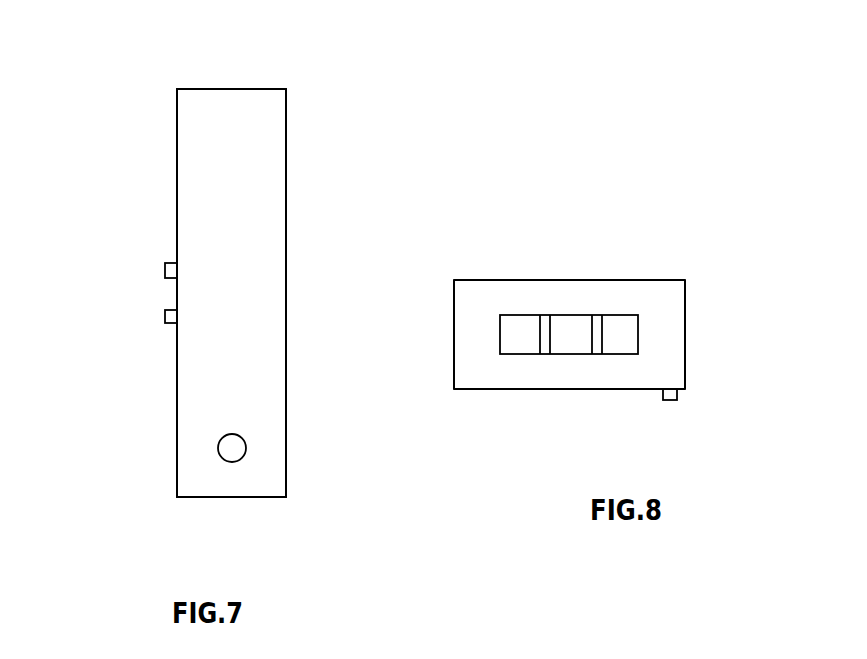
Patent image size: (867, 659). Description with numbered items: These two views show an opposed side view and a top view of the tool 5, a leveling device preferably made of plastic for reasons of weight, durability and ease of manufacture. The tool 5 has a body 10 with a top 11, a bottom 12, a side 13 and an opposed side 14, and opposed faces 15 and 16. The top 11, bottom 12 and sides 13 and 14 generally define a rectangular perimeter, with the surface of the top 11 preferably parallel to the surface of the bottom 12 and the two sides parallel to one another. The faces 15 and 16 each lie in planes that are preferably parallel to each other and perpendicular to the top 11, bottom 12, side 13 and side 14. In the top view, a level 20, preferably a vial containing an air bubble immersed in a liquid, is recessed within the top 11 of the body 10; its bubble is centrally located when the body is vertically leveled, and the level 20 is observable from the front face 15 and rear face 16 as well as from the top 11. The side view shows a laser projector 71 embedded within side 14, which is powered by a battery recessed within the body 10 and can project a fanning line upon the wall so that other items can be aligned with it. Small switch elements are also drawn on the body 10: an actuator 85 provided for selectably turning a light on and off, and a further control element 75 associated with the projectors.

In FIG. 7, the tool 5 is at (364, 70).
In FIG. 8, the tool 5 is at (596, 222).
In FIG. 7, the body 10 is at (177, 89).
In FIG. 8, the body 10 is at (685, 280).
In FIG. 7, the top 11 is at (253, 89).
In FIG. 7, the bottom 12 is at (251, 497).
In FIG. 8, the bottom 12 is at (613, 280).
In FIG. 8, the side 13 is at (454, 340).
In FIG. 7, the side 14 is at (218, 385).
In FIG. 8, the side 14 is at (685, 347).
In FIG. 7, the face 15 is at (177, 148).
In FIG. 8, the face 15 is at (530, 389).
In FIG. 7, the face 16 is at (286, 155).
In FIG. 8, the face 16 is at (511, 280).
In FIG. 8, the level 20 is at (606, 351).
In FIG. 7, the laser projector 71 is at (222, 459).
In FIG. 7, the connector 75 is at (165, 272).
In FIG. 8, the connector 75 is at (670, 400).
In FIG. 7, the actuator 85 is at (165, 317).